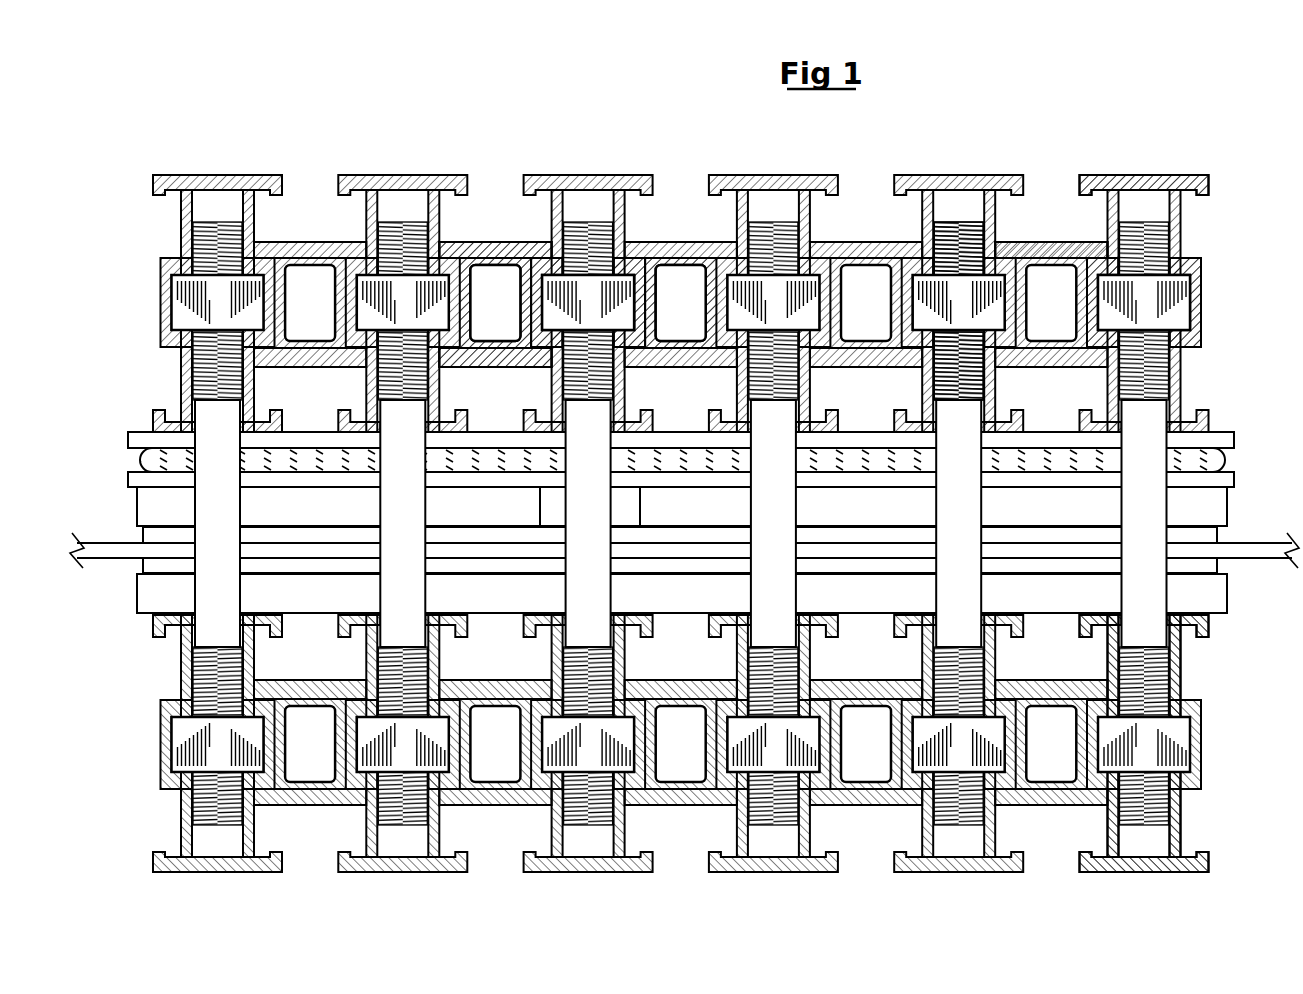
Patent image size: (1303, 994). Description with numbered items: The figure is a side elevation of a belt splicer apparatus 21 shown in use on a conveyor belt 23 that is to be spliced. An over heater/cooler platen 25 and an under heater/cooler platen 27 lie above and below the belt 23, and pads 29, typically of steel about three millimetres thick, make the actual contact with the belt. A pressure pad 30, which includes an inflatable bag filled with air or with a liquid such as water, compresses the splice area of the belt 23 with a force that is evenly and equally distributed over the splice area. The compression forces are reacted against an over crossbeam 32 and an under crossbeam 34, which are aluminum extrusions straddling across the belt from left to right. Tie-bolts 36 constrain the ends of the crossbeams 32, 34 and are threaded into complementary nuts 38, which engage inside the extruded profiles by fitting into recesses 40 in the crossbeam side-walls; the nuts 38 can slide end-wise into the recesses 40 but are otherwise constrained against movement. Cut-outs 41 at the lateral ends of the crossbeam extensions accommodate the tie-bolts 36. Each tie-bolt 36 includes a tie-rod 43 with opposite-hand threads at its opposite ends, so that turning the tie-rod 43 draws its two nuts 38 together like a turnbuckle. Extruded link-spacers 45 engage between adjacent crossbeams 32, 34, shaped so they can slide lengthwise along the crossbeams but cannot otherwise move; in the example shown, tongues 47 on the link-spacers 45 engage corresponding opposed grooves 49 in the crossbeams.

The splicer apparatus 21 is at (298, 141).
The belt 23 is at (1272, 552).
The over heater/cooler platen 25 is at (662, 522).
The under heater/cooler platen 27 is at (658, 604).
The pads 29 is at (1217, 568).
The pressure pad 30 is at (1228, 460).
The over crossbeam 32 is at (1147, 175).
The under crossbeam 34 is at (1182, 825).
The tie-bolts 36 is at (955, 222).
The nuts 38 is at (593, 290).
The recesses 40 is at (708, 316).
The cut-outs 41 is at (381, 434).
The tie-rods 43 is at (575, 532).
The link-spacers 45 is at (510, 247).
The tongues 47 is at (1104, 242).
The grooves 49 is at (1193, 248).